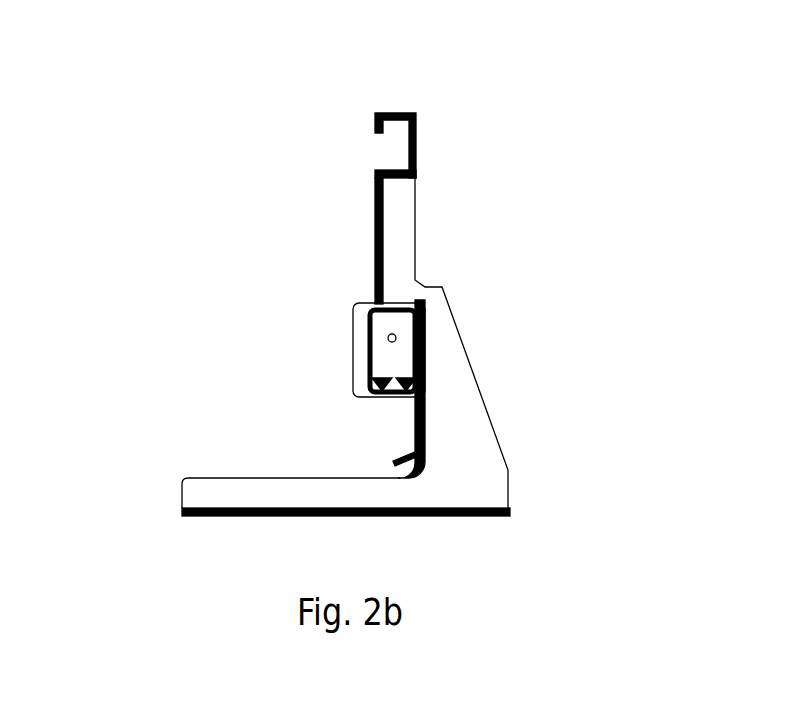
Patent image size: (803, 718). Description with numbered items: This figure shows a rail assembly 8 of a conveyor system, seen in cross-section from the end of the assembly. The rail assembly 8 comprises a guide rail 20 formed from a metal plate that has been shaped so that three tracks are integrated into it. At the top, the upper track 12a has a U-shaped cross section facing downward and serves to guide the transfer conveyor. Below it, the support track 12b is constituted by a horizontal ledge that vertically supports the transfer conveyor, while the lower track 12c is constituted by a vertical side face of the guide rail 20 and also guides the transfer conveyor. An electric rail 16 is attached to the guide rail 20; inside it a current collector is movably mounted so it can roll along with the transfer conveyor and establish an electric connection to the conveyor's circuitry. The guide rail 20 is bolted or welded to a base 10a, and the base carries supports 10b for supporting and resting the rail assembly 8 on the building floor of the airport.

The rail assembly 8 is at (500, 122).
The base 10a is at (440, 348).
The supports 10b is at (202, 502).
The upper track 12a is at (378, 117).
The support track 12b is at (380, 168).
The lower track 12c is at (418, 425).
The electric rail 16 is at (353, 328).
The guide rail 20 is at (375, 250).